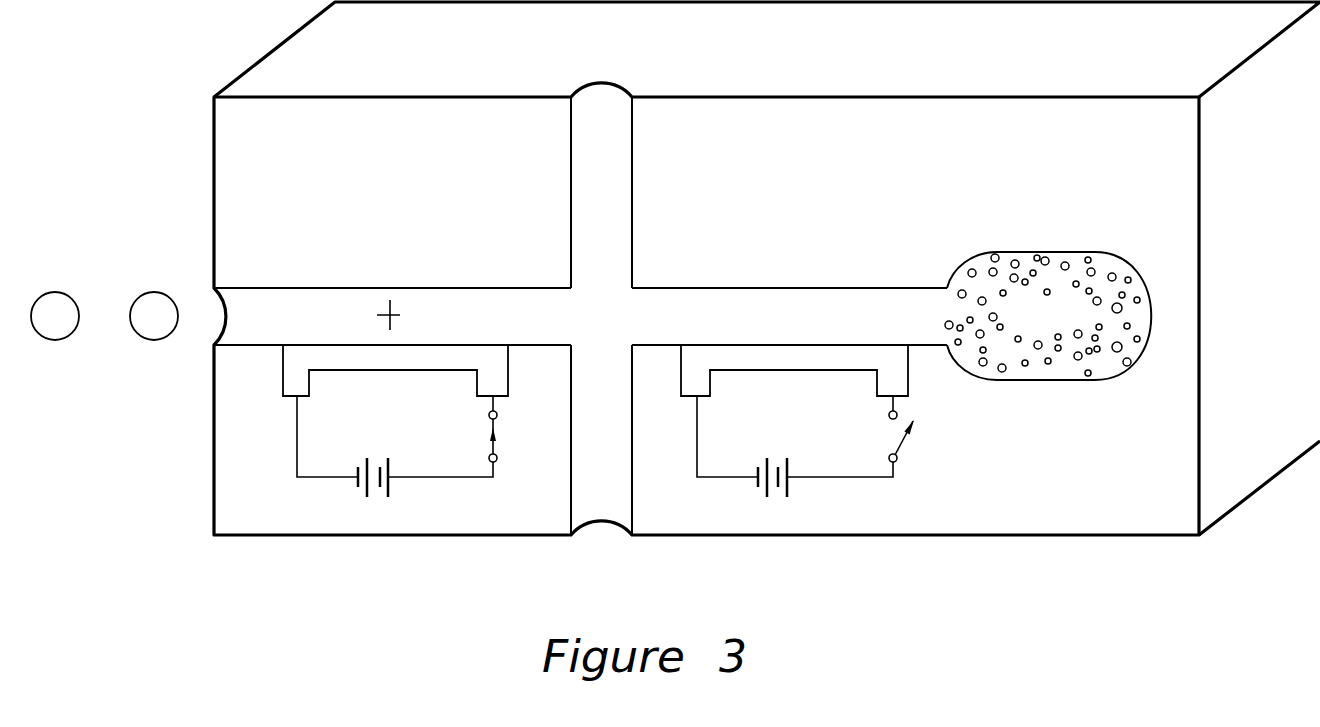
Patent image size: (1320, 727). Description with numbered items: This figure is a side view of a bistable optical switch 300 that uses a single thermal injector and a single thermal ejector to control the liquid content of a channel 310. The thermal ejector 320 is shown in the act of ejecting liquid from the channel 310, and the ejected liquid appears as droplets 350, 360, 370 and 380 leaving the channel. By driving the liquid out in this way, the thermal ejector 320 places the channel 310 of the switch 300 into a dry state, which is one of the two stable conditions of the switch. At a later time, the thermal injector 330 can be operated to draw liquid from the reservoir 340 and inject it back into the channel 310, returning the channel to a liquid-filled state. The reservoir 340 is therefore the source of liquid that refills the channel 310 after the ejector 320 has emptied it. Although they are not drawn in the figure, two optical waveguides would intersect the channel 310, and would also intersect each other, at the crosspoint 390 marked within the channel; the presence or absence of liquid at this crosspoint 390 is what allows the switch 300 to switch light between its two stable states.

The switch 300 is at (880, 173).
The channel 310 is at (531, 331).
The thermal ejector 320 is at (282, 379).
The thermal injector 330 is at (680, 370).
The reservoir 340 is at (1068, 330).
The liquid droplet 350 is at (55, 316).
The liquid droplet 360 is at (154, 316).
The liquid droplet 370 is at (601, 192).
The liquid droplet 380 is at (601, 440).
The crosspoint 390 is at (398, 316).